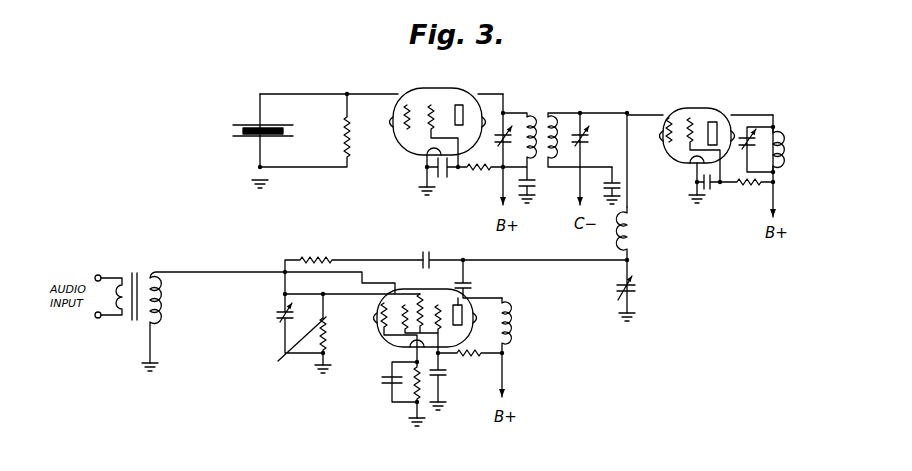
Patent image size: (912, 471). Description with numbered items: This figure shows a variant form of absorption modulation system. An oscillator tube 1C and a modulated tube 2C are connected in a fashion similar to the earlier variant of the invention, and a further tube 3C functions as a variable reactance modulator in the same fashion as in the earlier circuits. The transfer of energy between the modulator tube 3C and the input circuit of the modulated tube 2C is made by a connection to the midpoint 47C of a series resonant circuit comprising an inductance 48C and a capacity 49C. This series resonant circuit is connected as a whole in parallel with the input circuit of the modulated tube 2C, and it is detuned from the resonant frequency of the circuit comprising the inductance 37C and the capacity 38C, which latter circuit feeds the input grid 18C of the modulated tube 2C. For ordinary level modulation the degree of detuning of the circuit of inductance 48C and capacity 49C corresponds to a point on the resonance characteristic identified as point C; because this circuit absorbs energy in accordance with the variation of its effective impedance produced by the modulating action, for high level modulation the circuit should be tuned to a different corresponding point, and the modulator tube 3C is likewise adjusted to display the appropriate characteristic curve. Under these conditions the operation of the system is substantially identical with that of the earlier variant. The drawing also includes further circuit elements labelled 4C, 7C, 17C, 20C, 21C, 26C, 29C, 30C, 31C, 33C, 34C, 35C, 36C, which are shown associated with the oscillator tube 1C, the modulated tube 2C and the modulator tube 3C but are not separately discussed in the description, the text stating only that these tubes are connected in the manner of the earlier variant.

The oscillator tube 1C is at (426, 93).
The modulated tube 2C is at (703, 145).
The modulator tube 3C is at (438, 319).
The microphone (condenser transmitter) 4C is at (232, 129).
The oscillator tank coil 7C is at (524, 110).
The output tuning coil 17C is at (776, 137).
The input grid 18C is at (665, 142).
The bypass condenser 20C is at (619, 182).
The cathode resistor-condenser bias network 21C is at (417, 388).
The grid electrodes of modulator tube 26C is at (430, 303).
The coupling condenser 29C is at (471, 287).
The plate of modulator tube 30C is at (461, 318).
The modulator output coil 31C is at (514, 323).
The variable resistor and condenser (bias adjustment) 33C is at (299, 329).
The filament of modulator tube 34C is at (413, 301).
The coupling condenser 35C is at (431, 251).
The grid leak resistor 36C is at (326, 256).
The inductance 37C is at (553, 118).
The capacity 38C is at (586, 133).
The midpoint 47C is at (622, 263).
The inductance 48C is at (638, 234).
The capacity 49C is at (638, 289).